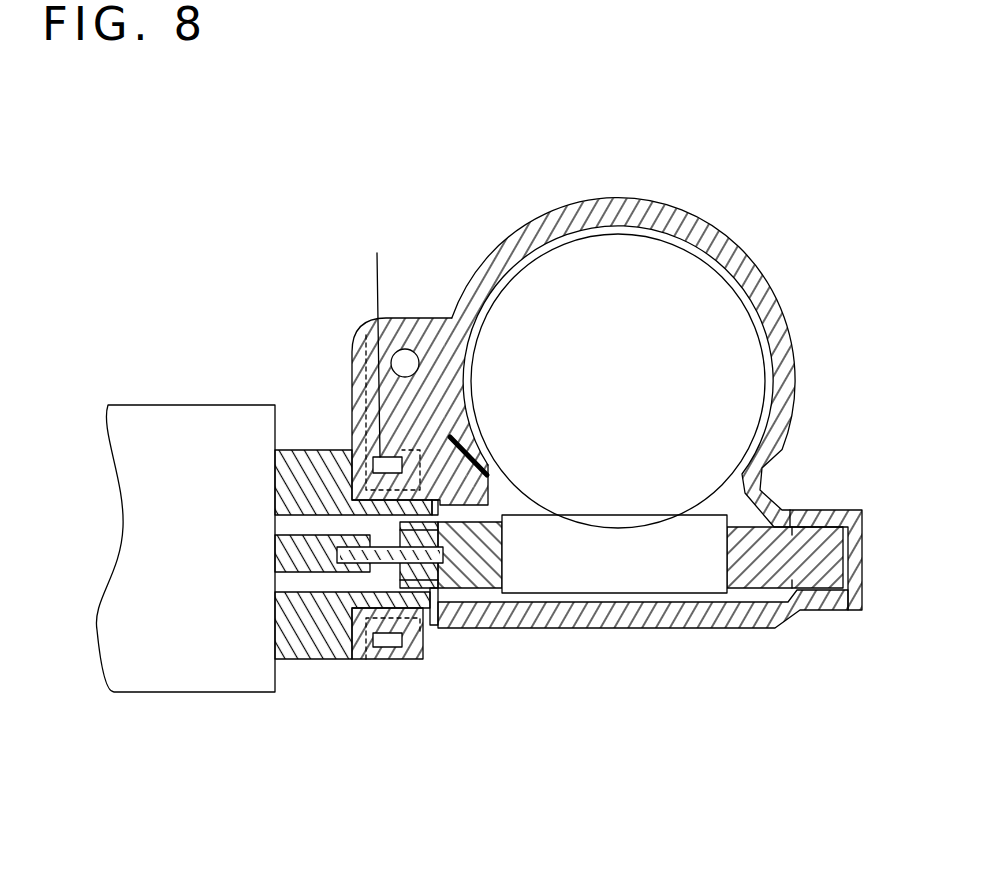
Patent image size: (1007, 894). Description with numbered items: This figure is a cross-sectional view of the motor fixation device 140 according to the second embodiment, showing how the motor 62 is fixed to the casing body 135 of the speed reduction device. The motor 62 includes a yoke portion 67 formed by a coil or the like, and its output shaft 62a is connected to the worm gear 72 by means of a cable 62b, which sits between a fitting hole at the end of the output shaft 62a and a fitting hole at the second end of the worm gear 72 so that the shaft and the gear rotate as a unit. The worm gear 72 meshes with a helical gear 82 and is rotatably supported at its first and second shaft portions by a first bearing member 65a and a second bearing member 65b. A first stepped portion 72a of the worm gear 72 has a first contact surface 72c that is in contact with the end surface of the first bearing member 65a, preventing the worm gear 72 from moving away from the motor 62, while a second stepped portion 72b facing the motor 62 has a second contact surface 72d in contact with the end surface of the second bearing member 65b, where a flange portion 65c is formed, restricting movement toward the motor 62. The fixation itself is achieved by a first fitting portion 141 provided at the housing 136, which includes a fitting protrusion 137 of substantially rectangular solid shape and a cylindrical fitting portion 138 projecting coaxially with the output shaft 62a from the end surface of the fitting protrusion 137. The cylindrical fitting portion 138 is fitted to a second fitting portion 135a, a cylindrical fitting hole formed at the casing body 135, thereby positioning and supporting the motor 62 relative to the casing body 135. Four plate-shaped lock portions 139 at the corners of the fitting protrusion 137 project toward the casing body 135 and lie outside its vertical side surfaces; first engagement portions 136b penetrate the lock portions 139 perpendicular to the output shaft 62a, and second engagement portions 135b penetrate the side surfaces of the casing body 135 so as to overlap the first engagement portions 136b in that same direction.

The motor 62 is at (125, 368).
The yoke portion 67 is at (157, 435).
The output shaft 62a is at (293, 533).
The cable 62b is at (275, 553).
The helical gear 82 is at (705, 290).
The casing body 135 is at (487, 255).
The second fitting portion 135a is at (368, 604).
The second engagement portion 135b is at (343, 803).
The housing 136 is at (309, 450).
The first engagement portion 136b is at (410, 457).
The fitting protrusion 137 is at (292, 659).
The cylindrical fitting portion 138 is at (420, 457).
The lock portion 139 is at (366, 335).
The motor fixation device 140 is at (288, 193).
The first fitting portion 141 is at (312, 330).
The first bearing member 65a is at (822, 510).
The second bearing member 65b is at (432, 612).
The flange portion 65c is at (468, 422).
The worm gear 72 is at (465, 572).
The first stepped portion 72a is at (782, 610).
The second stepped portion 72b is at (440, 512).
The first contact surface 72c is at (797, 592).
The second contact surface 72d is at (440, 604).